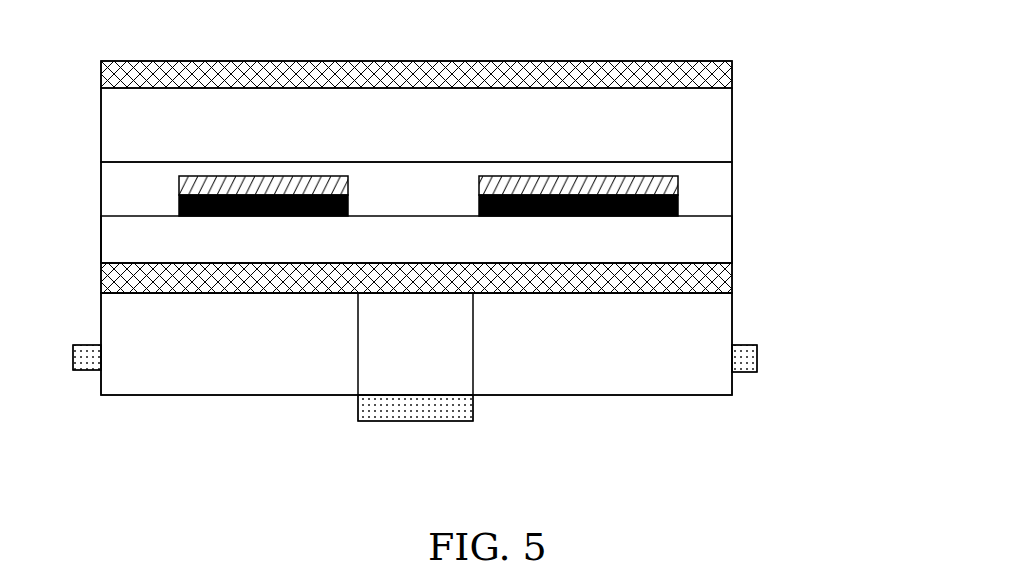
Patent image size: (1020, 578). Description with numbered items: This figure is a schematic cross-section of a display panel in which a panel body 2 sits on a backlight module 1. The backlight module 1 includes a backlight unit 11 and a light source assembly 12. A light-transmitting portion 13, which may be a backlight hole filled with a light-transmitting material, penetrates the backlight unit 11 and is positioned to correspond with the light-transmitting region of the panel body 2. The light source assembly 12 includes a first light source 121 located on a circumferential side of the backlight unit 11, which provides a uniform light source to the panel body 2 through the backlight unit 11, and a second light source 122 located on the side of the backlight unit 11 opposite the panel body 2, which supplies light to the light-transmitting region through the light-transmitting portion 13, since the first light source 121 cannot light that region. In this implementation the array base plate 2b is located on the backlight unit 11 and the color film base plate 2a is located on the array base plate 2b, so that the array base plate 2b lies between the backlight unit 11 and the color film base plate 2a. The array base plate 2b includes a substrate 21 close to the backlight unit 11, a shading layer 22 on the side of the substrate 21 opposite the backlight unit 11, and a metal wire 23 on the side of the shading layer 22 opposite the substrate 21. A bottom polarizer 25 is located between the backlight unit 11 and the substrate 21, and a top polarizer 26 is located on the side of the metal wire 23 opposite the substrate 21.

The backlight module 1 is at (740, 406).
The backlight unit 11 is at (572, 378).
The light source assembly 12 is at (268, 455).
The first light source 121 is at (73, 370).
The second light source 122 is at (358, 412).
The light-transmitting portion 13 is at (430, 354).
The panel body 2 is at (736, 54).
The color film base plate 2a is at (820, 86).
The array base plate 2b is at (820, 176).
The substrate 21 is at (700, 248).
The shading layer 22 is at (670, 218).
The metal wire 23 is at (660, 185).
The bottom polarizer 25 is at (713, 285).
The top polarizer 26 is at (732, 73).